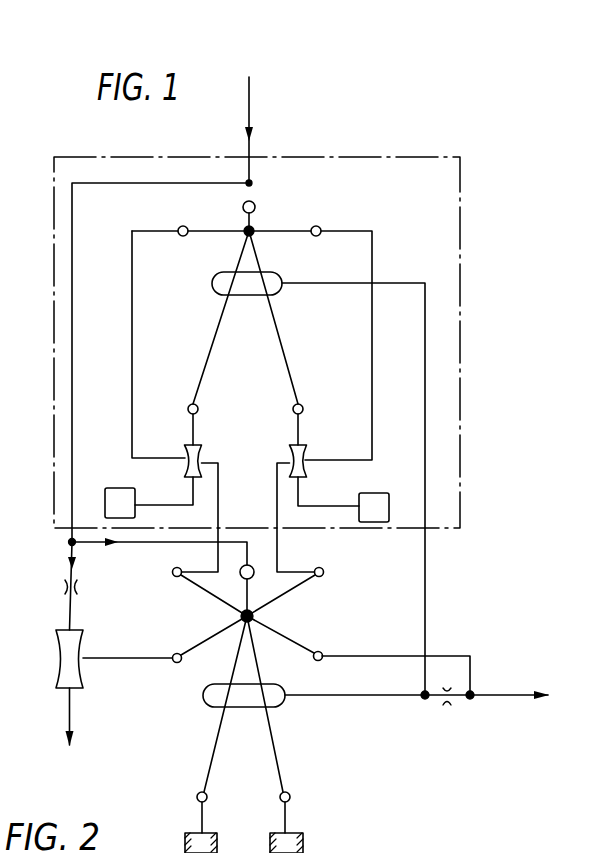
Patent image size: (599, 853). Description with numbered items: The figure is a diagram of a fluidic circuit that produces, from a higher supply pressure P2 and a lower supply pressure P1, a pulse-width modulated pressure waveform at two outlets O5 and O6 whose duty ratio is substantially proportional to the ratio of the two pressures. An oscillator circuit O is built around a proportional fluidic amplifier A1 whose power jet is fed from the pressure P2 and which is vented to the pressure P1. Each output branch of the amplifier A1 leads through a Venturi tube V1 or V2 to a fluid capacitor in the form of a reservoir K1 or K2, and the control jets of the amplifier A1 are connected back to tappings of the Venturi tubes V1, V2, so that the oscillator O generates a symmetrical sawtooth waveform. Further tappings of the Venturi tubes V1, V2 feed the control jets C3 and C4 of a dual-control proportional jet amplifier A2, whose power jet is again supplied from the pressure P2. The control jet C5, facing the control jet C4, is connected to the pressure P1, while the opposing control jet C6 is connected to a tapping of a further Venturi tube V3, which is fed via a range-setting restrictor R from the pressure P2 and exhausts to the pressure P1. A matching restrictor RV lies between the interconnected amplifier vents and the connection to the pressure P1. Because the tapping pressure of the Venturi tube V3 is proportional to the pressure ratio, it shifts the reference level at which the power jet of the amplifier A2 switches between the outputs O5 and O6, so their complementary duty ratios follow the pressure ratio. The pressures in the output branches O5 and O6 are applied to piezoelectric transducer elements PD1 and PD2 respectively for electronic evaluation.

The higher supply pressure P2 is at (266, 130).
The proportional fluidic amplifier A1 is at (264, 221).
The oscillator circuit O is at (466, 268).
The Venturi tube V1 is at (314, 440).
The Venturi tube V2 is at (208, 440).
The reservoir K1 is at (377, 492).
The reservoir K2 is at (117, 493).
The range-setting restrictor R is at (82, 586).
The control jet C4 is at (191, 584).
The control jet C3 is at (303, 586).
The dual-control proportional jet amplifier A2 is at (262, 614).
The Venturi tube V3 is at (57, 648).
The control jet C6 is at (202, 658).
The control jet C5 is at (358, 655).
The matching restrictor RV is at (447, 706).
The lower supply pressure P1 is at (308, 720).
The output O6 is at (204, 812).
The output O5 is at (287, 812).
The piezoelectric transducer element PD2 is at (186, 842).
The piezoelectric transducer element PD1 is at (303, 840).